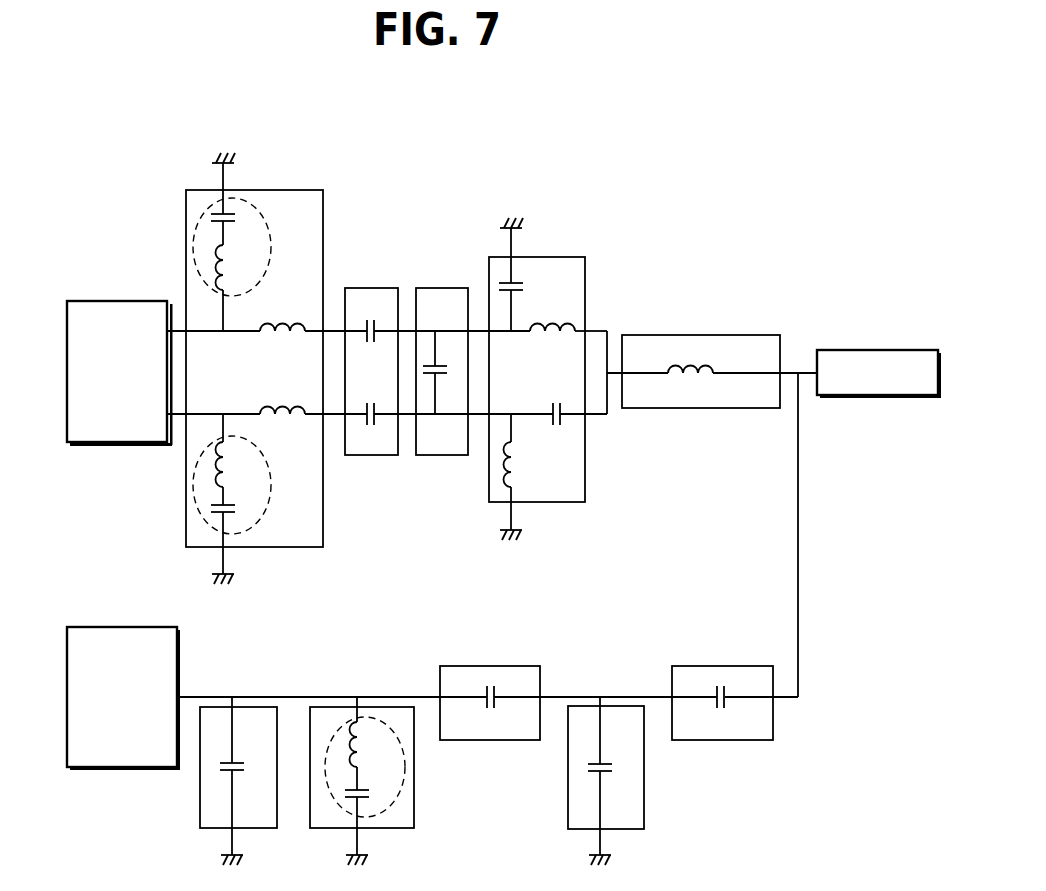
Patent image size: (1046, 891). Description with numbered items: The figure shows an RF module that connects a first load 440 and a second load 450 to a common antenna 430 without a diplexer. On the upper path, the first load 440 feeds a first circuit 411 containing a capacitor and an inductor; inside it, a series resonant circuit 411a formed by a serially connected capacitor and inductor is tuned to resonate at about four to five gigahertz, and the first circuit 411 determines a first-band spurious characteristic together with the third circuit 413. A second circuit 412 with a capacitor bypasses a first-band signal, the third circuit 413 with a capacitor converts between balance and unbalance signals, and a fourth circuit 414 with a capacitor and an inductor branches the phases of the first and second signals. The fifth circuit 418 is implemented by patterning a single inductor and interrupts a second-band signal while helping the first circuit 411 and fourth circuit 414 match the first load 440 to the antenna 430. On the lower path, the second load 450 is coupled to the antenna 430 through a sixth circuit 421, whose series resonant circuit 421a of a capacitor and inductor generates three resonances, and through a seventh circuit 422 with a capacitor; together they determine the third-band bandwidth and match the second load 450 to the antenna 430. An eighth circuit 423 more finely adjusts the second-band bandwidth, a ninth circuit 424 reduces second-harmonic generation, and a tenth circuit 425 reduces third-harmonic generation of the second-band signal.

The first load 440 is at (133, 300).
The first circuit 411 is at (269, 364).
The series resonant circuit 411a is at (270, 238).
The second circuit 412 is at (378, 288).
The third circuit 413 is at (443, 288).
The fourth circuit 414 is at (568, 257).
The fifth circuit 418 is at (715, 335).
The antenna 430 is at (891, 350).
The second load 450 is at (150, 627).
The ninth circuit 424 is at (200, 820).
The sixth circuit 421 is at (394, 784).
The series resonant circuit 421a is at (394, 798).
The eighth circuit 423 is at (518, 666).
The tenth circuit 425 is at (644, 808).
The seventh circuit 422 is at (750, 666).